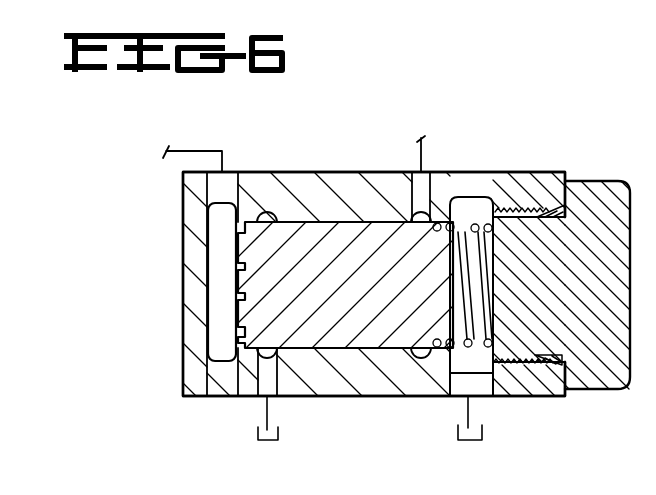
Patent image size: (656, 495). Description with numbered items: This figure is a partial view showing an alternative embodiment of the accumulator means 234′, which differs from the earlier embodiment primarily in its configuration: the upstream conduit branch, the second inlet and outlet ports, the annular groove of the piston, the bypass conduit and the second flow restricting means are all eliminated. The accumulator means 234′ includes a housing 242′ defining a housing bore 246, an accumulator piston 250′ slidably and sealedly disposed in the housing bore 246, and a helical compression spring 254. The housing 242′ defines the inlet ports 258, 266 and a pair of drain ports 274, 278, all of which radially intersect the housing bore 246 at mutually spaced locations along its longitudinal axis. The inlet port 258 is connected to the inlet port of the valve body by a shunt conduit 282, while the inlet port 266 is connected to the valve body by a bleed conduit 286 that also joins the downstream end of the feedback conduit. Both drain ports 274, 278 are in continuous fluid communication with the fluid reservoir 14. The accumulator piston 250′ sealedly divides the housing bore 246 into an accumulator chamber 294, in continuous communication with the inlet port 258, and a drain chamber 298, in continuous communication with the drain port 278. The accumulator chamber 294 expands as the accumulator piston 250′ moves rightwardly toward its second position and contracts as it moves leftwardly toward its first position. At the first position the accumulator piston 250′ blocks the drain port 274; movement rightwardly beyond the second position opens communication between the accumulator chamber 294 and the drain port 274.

The shunt conduit 282 is at (199, 151).
The inlet port 258 is at (230, 180).
The bleed conduit 286 is at (415, 147).
The inlet port 266 is at (430, 178).
The helical compression spring 254 is at (487, 205).
The accumulator chamber 294 is at (218, 247).
The accumulator piston 250′ is at (370, 294).
The accumulator means 234′ is at (144, 309).
The housing 242′ is at (183, 374).
The housing bore 246 is at (262, 350).
The drain port 274 is at (271, 396).
The fluid reservoir 14 is at (258, 428).
The drain chamber 298 is at (467, 373).
The drain port 278 is at (486, 393).